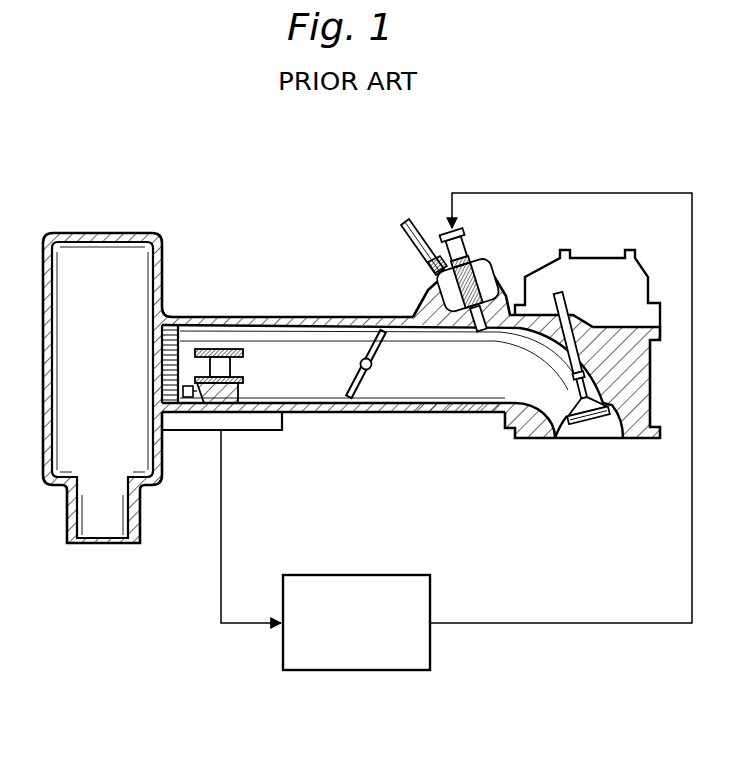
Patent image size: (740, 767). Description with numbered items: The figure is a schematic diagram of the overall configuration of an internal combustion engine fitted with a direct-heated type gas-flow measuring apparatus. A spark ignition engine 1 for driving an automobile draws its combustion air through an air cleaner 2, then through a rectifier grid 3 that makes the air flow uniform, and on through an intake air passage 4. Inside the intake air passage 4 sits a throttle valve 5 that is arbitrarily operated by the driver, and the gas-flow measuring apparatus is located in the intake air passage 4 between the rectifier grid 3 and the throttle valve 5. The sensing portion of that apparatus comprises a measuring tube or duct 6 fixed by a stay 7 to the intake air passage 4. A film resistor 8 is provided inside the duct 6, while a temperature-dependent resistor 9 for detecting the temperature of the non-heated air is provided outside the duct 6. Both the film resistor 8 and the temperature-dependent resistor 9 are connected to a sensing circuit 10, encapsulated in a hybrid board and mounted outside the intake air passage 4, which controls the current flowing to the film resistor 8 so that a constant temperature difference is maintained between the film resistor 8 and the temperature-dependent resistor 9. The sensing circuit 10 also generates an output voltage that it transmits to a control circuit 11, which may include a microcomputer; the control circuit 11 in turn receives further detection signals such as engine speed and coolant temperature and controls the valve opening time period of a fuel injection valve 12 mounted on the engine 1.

The spark ignition engine 1 is at (645, 382).
The air cleaner 2 is at (98, 257).
The rectifier grid 3 is at (183, 327).
The intake air passage 4 is at (333, 397).
The throttle valve 5 is at (371, 368).
The measuring tube 6 is at (240, 347).
The stay 7 is at (238, 392).
The film resistor 8 is at (230, 368).
The temperature-dependent resistor 9 is at (197, 397).
The sensing circuit 10 is at (258, 432).
The control circuit 11 is at (391, 575).
The fuel injection valve 12 is at (458, 248).